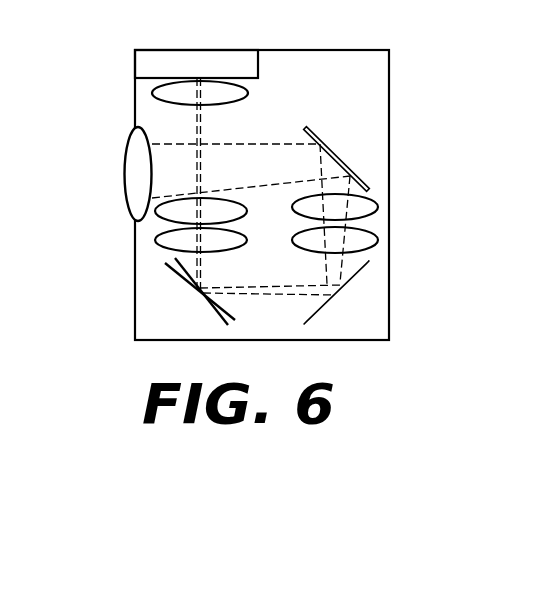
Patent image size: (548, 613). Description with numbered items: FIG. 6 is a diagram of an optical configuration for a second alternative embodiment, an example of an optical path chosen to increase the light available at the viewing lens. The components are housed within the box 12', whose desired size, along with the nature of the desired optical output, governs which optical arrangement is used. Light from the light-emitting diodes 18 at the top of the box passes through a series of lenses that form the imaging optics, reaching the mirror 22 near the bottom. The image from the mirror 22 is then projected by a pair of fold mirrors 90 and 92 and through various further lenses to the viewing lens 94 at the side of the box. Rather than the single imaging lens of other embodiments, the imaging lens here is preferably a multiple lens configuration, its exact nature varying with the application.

The box 12' is at (288, 195).
The light-emitting diodes 18 is at (220, 62).
The viewing lens 94 is at (138, 178).
The fold mirror 92 is at (352, 176).
The fold mirror 90 is at (340, 285).
The mirror 22 is at (197, 290).